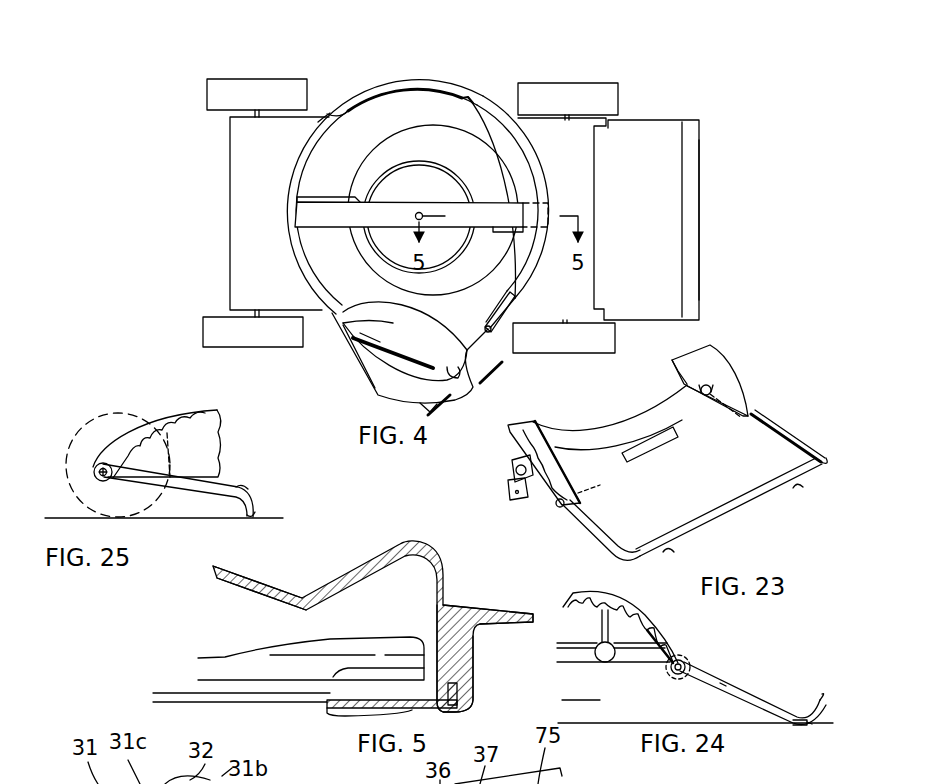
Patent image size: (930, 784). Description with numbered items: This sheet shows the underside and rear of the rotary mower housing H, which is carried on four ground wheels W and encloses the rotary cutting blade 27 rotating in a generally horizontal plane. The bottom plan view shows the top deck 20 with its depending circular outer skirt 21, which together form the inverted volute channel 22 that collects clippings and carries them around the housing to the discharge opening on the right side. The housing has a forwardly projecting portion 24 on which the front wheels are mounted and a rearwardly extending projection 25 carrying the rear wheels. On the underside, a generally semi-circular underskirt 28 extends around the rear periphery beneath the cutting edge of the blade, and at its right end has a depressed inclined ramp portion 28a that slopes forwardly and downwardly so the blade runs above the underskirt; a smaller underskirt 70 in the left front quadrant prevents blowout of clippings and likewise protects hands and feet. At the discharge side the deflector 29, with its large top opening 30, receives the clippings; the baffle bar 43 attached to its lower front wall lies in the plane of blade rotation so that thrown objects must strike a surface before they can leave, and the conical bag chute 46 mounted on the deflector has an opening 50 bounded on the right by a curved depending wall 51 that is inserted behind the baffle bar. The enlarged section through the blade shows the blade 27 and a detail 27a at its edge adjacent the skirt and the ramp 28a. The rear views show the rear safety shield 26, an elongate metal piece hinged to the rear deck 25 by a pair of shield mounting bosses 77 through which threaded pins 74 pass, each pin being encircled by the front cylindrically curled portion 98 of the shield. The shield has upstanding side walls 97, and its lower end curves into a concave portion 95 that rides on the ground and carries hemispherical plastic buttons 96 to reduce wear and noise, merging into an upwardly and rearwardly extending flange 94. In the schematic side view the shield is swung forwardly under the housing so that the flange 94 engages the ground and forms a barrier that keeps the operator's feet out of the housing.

In FIG. 4, the housing H is at (330, 106).
In FIG. 4, the ground wheels W is at (210, 92).
In FIG. 5, the top deck 20 is at (257, 585).
In FIG. 4, the outer skirt 21 is at (292, 242).
In FIG. 5, the outer skirt 21 is at (474, 671).
In FIG. 4, the volute channel 22 is at (378, 112).
In FIG. 23, the volute channel 22 is at (600, 426).
In FIG. 5, the volute channel 22 is at (440, 560).
In FIG. 4, the forwardly projecting portion 24 is at (246, 178).
In FIG. 4, the rearwardly extending projection 25 is at (590, 155).
In FIG. 23, the rearwardly extending projection 25 is at (725, 362).
In FIG. 25, the rearwardly extending projection 25 is at (180, 410).
In FIG. 5, the rearwardly extending projection 25 is at (515, 613).
In FIG. 24, the rearwardly extending projection 25 is at (636, 606).
In FIG. 4, the rear safety shield 26 is at (703, 162).
In FIG. 23, the rear safety shield 26 is at (784, 430).
In FIG. 25, the rear safety shield 26 is at (188, 500).
In FIG. 24, the rear safety shield 26 is at (753, 690).
In FIG. 4, the rotary cutting blade 27 is at (325, 199).
In FIG. 5, the rotary cutting blade 27 is at (228, 656).
In FIG. 5, the blade tab 27a is at (401, 678).
In FIG. 4, the underskirt 28 is at (508, 110).
In FIG. 4, the inclined ramp portion 28a is at (491, 308).
In FIG. 5, the inclined ramp portion 28a is at (345, 714).
In FIG. 4, the deflector 29 is at (483, 387).
In FIG. 4, the top opening 30 is at (450, 400).
In FIG. 4, the baffle bar 43 is at (398, 378).
In FIG. 4, the bag chute 46 is at (495, 369).
In FIG. 4, the opening 50 is at (355, 336).
In FIG. 4, the curved depending wall 51 is at (420, 343).
In FIG. 4, the underskirt 70 is at (423, 90).
In FIG. 23, the pin 74 is at (556, 509).
In FIG. 23, the shield mounting bosses 77 is at (755, 412).
In FIG. 24, the shield mounting bosses 77 is at (683, 658).
In FIG. 23, the flange 94 is at (708, 506).
In FIG. 25, the flange 94 is at (252, 520).
In FIG. 24, the flange 94 is at (825, 696).
In FIG. 24, the curved concave portion 95 is at (812, 726).
In FIG. 23, the hemispherical plastic buttons 96 is at (800, 490).
In FIG. 25, the hemispherical plastic buttons 96 is at (246, 489).
In FIG. 24, the hemispherical plastic buttons 96 is at (800, 726).
In FIG. 23, the upstanding side walls 97 is at (585, 533).
In FIG. 24, the upstanding side walls 97 is at (722, 687).
In FIG. 24, the cylindrically curled portion 98 is at (673, 677).